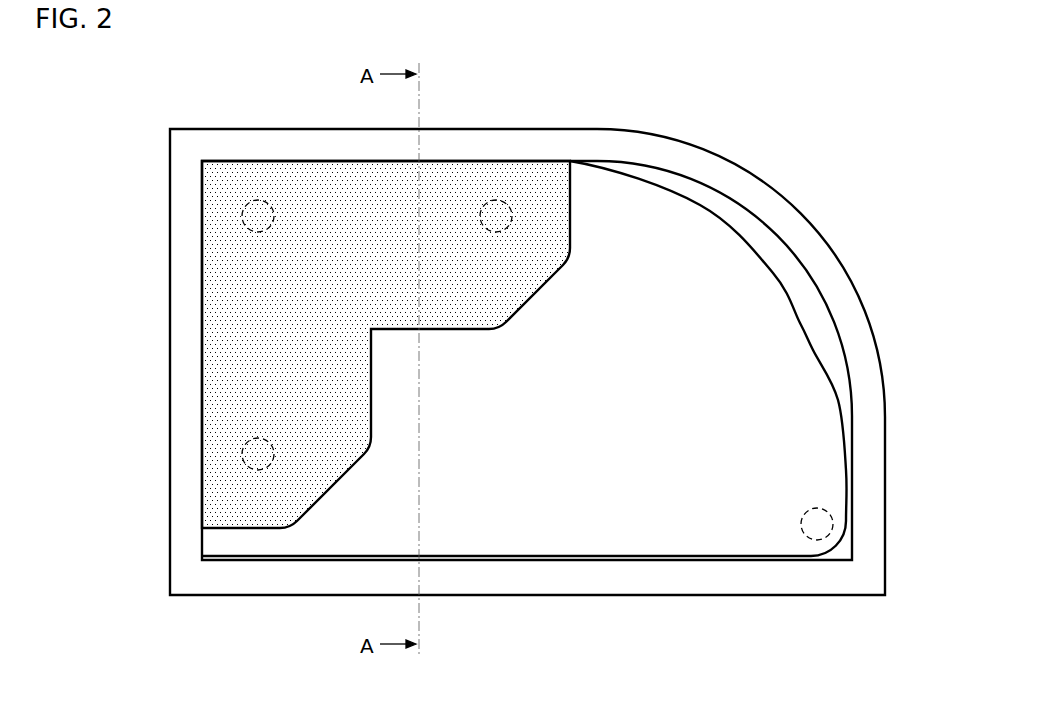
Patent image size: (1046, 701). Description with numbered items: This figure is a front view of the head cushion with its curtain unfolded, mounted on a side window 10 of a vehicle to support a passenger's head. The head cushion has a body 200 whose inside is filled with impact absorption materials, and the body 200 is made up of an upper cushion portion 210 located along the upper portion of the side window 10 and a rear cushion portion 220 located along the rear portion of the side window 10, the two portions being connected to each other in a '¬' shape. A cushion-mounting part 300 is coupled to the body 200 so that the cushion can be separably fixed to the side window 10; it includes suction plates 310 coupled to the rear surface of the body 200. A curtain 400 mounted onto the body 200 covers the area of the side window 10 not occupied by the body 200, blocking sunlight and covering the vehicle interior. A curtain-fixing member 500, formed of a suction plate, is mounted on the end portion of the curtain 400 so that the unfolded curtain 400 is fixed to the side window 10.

The side window 10 is at (752, 233).
The body 200 is at (202, 285).
The upper cushion portion 210 is at (349, 291).
The rear cushion portion 220 is at (228, 405).
The cushion-mounting part 300 is at (258, 200).
The suction plates 310 is at (289, 280).
The curtain 400 is at (773, 273).
The curtain-fixing member 500 is at (812, 541).